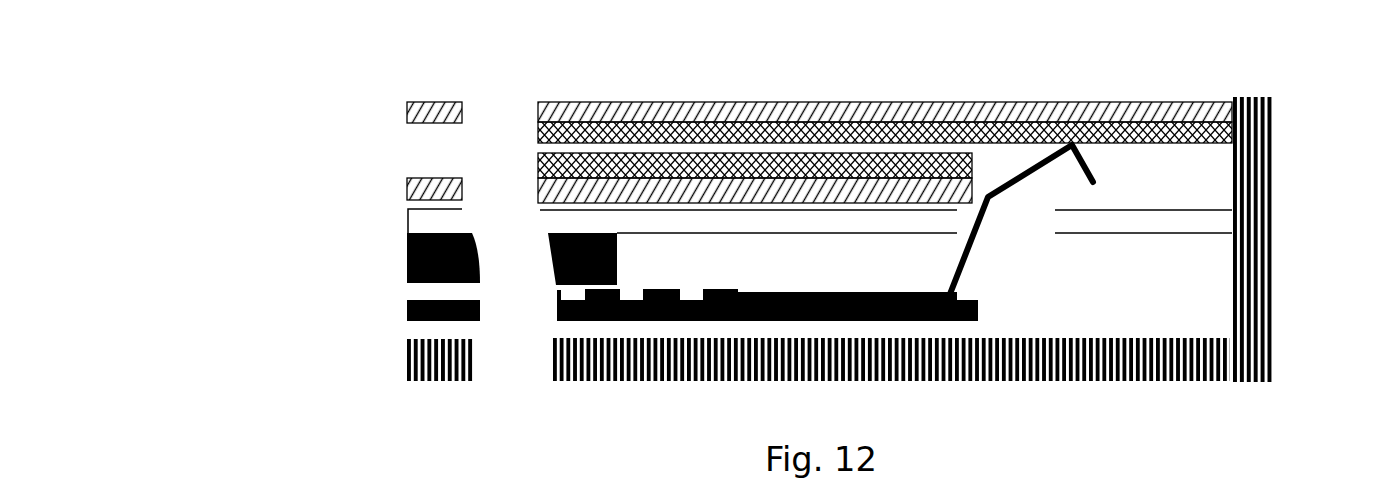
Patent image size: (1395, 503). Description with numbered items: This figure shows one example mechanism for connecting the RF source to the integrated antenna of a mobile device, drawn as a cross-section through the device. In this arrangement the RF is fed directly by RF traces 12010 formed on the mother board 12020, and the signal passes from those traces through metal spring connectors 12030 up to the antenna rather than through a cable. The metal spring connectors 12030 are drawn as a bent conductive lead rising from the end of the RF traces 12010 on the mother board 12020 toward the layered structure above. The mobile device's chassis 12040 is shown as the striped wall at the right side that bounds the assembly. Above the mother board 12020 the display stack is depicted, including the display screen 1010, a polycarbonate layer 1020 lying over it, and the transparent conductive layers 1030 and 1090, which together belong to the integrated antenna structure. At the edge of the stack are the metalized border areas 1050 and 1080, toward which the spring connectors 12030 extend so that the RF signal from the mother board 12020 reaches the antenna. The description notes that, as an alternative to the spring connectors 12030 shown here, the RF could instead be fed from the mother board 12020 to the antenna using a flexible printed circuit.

The transparent conductive layer 1030 is at (408, 125).
The transparent conductive layer 1090 is at (407, 198).
The metalized border area 1080 is at (970, 128).
The metalized border area 1050 is at (725, 163).
The polycarbonate layer 1020 is at (393, 223).
The display screen 1010 is at (392, 262).
The mother board 12020 is at (950, 323).
The RF traces 12010 is at (898, 292).
The metal spring connectors 12030 is at (982, 250).
The chassis 12040 is at (1273, 312).